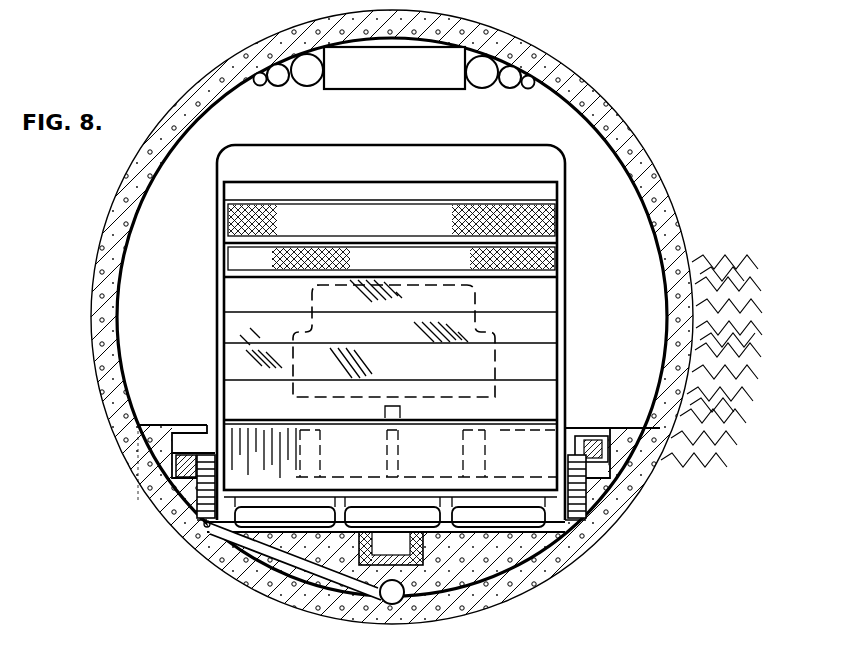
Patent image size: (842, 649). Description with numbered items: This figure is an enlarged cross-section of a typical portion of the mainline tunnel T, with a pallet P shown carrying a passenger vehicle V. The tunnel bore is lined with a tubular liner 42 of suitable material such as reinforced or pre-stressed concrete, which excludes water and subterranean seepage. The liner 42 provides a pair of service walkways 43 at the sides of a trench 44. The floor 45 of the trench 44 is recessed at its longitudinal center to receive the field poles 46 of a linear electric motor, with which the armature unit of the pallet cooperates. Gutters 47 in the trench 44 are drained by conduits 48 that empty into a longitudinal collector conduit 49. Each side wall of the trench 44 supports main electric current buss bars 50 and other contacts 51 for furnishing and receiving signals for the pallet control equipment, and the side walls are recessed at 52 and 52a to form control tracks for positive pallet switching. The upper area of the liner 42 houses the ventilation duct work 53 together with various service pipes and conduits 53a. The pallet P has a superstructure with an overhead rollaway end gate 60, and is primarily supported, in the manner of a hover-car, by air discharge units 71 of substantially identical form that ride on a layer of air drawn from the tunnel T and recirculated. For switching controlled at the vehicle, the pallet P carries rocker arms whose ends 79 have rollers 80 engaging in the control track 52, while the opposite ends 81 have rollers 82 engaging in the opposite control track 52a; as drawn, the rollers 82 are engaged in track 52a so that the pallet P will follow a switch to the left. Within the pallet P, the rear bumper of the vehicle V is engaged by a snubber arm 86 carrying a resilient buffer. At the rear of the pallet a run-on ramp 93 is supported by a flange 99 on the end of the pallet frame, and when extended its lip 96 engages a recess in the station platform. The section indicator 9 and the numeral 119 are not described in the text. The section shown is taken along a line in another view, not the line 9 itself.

The mainline tunnel T is at (174, 97).
The tubular liner 42 is at (108, 239).
The service walkways 43 is at (160, 420).
The trench 44 is at (204, 526).
The floor 45 is at (322, 528).
The field poles 46 is at (400, 530).
The gutters 47 is at (200, 544).
The conduits 48 is at (276, 600).
The longitudinal collector conduit 49 is at (392, 605).
The main electric current buss bars 50 is at (190, 503).
The contacts 51 is at (634, 492).
The control track 52 is at (640, 478).
The control track 52a is at (160, 488).
The duct work 53 is at (378, 90).
The service pipes and conduits 53a is at (262, 86).
The overhead rollaway end gate 60 is at (545, 300).
The air discharge units 71 is at (253, 518).
The rocker arm ends 79 is at (596, 430).
The rollers 80 is at (606, 434).
The rocker arm ends 81 is at (188, 428).
The rollers 82 is at (176, 460).
The snubber arm 86 is at (400, 416).
The run-on ramp 93 is at (526, 460).
The lip 96 is at (508, 422).
The flange 99 is at (545, 484).
The element 119 is at (110, 646).
The section line 9 is at (565, 147).
The pallet P is at (214, 216).
The passenger vehicle V is at (480, 340).